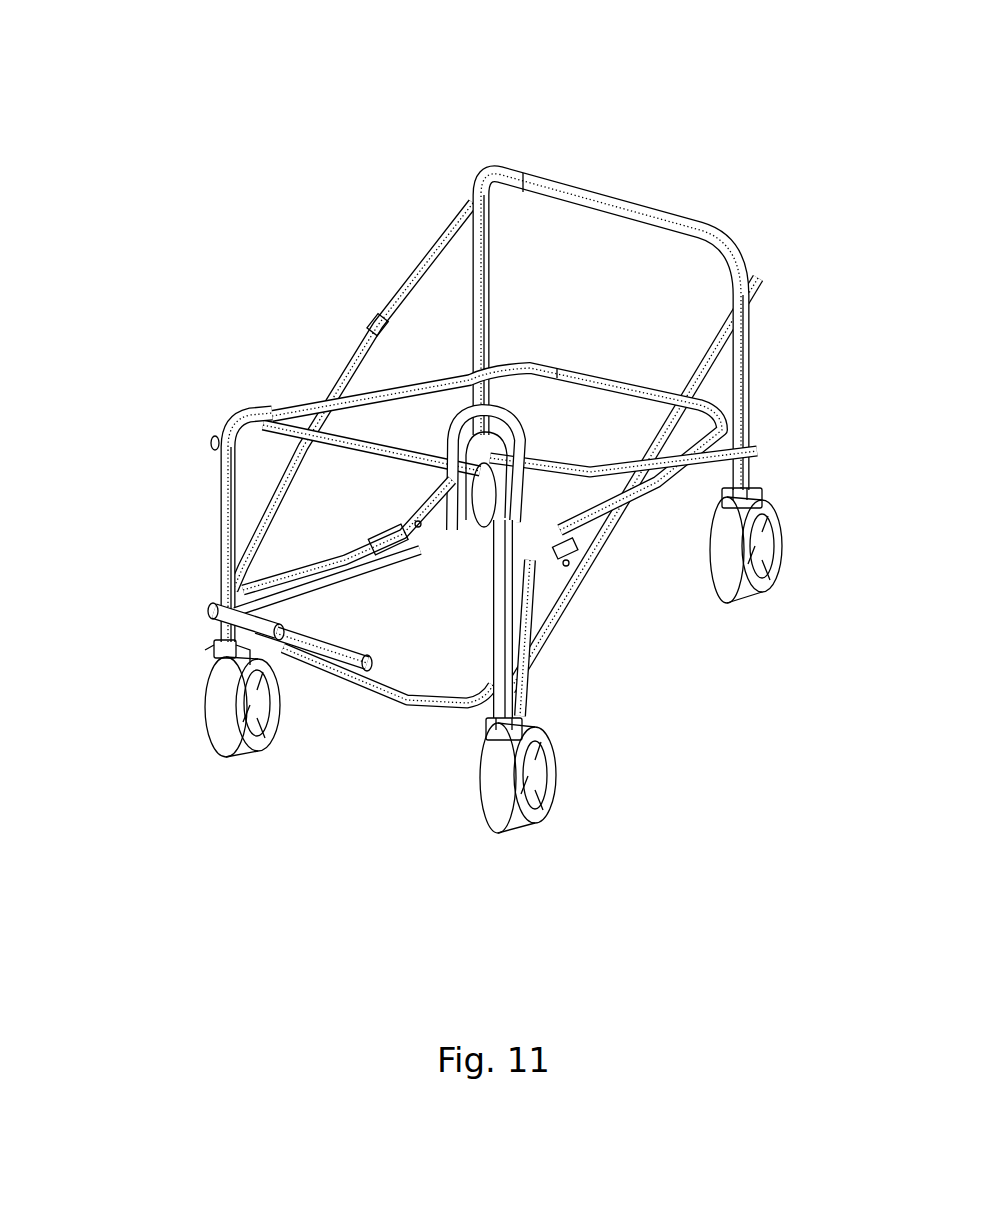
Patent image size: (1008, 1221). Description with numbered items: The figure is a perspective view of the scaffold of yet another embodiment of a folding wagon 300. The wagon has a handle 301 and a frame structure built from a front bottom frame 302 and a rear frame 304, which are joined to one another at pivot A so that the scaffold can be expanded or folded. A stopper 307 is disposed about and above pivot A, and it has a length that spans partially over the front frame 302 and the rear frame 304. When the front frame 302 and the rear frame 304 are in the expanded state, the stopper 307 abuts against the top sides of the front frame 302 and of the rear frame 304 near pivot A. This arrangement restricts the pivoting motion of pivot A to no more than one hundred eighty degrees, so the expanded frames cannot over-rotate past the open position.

The folding wagon 300 is at (461, 431).
The handle 301 is at (248, 630).
The front bottom frame 302 is at (297, 577).
The rear frame 304 is at (450, 443).
The stopper 307 is at (417, 525).
The pivot A is at (410, 513).